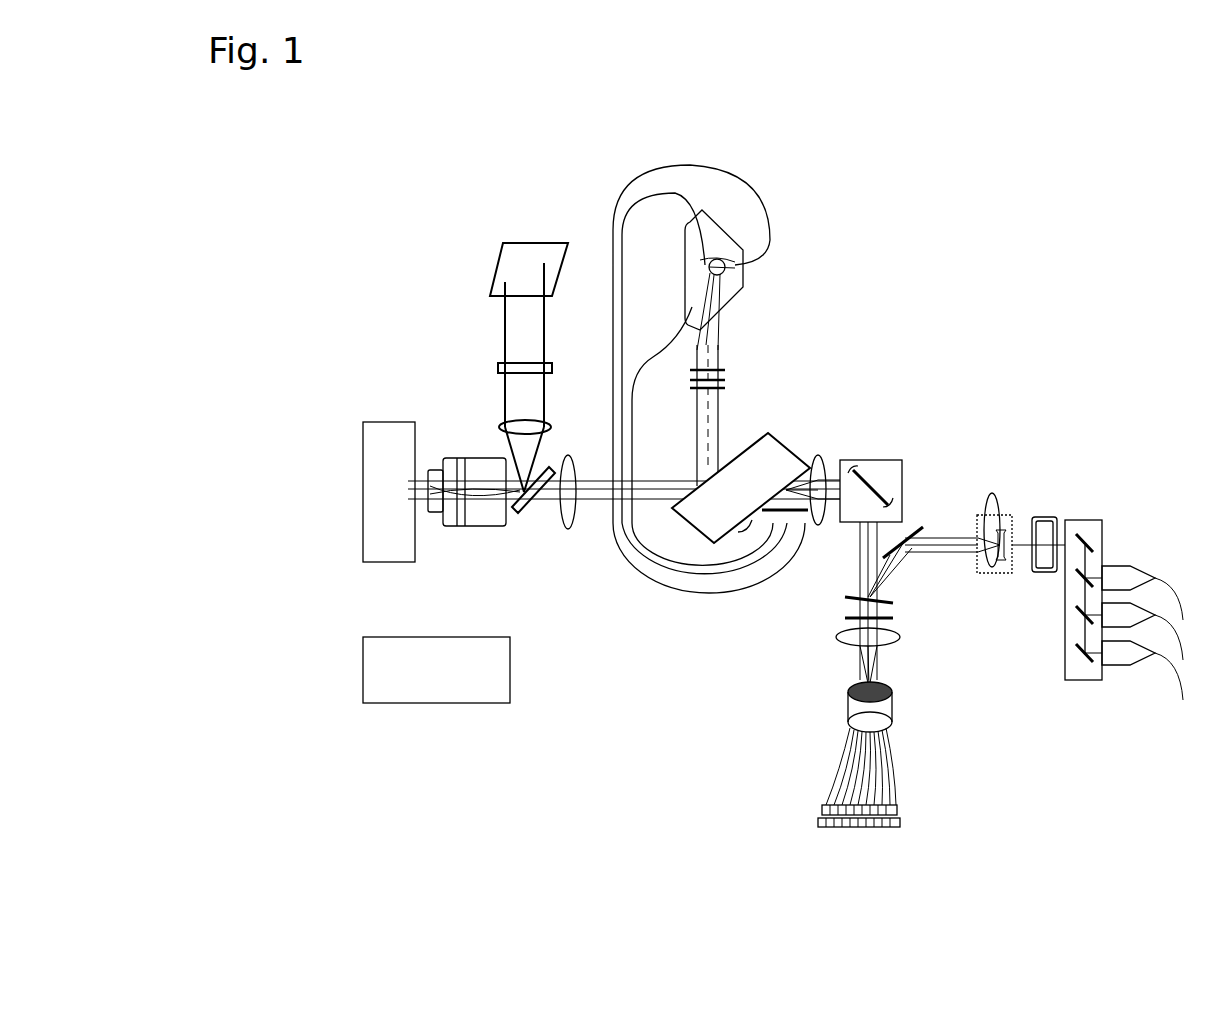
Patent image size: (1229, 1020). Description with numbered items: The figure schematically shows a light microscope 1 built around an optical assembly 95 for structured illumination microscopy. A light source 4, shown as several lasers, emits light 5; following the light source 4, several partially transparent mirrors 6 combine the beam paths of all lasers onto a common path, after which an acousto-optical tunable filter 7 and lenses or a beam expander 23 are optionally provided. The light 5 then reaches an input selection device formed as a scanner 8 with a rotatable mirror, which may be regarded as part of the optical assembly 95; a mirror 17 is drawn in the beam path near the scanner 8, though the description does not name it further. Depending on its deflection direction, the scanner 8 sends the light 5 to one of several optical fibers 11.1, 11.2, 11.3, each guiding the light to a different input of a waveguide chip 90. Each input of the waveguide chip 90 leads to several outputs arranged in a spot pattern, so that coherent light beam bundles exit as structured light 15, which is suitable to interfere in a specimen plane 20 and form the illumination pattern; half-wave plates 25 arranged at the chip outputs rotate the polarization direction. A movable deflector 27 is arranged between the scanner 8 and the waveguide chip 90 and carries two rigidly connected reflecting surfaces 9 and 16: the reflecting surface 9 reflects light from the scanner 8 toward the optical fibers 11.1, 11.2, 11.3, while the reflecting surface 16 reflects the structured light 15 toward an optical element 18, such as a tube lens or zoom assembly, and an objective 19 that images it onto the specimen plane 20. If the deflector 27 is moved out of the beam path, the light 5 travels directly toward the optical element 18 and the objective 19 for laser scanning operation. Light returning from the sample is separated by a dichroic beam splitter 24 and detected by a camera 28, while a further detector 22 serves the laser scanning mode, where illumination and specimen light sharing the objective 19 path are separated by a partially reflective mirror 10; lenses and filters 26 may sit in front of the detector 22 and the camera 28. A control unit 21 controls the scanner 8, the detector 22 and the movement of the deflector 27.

The light microscope 1 is at (549, 84).
The light source 4 is at (1137, 556).
The light 5 is at (860, 555).
The partially transparent mirrors 6 is at (1093, 518).
The acousto-optical tunable filter 7 is at (1052, 516).
The scanner 8 is at (868, 458).
The reflecting surface 9 is at (740, 538).
The partially reflective mirror 10 is at (847, 598).
The optical fiber 11.1 is at (634, 553).
The optical fiber 11.2 is at (626, 574).
The optical fiber 11.3 is at (648, 583).
The structured light 15 is at (697, 436).
The reflecting surface 16 is at (764, 434).
The mirror 17 is at (910, 530).
The optical element 18 is at (566, 530).
The objective 19 is at (471, 526).
The specimen plane 20 is at (389, 492).
The control unit 21 is at (436, 670).
The detector 22 is at (902, 824).
The beam expander 23 is at (994, 521).
The beam splitter 24 is at (528, 512).
The half-wave plates 25 is at (727, 381).
The filters 26 is at (498, 367).
The movable deflector 27 is at (741, 488).
The camera 28 is at (500, 262).
The waveguide chip 90 is at (733, 305).
The optical assembly 95 is at (831, 412).